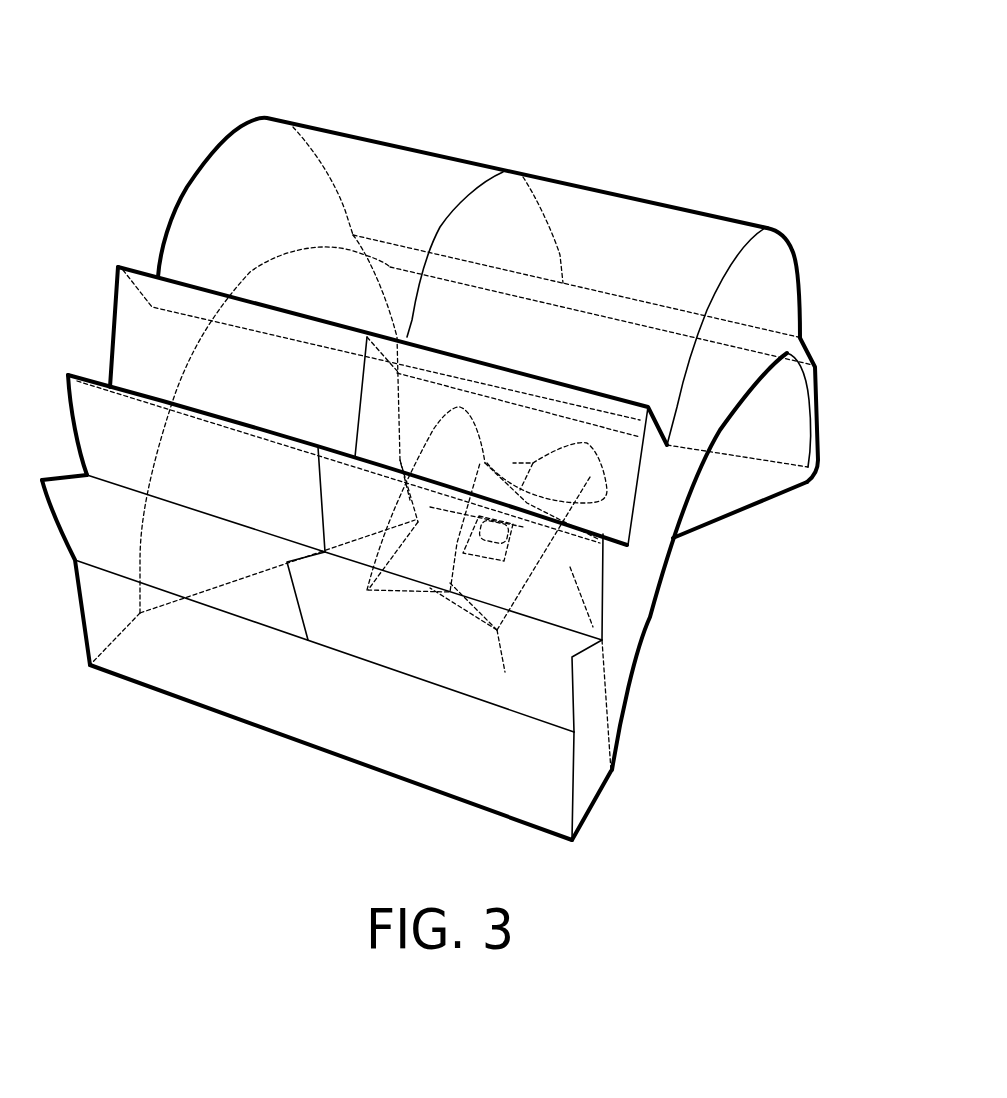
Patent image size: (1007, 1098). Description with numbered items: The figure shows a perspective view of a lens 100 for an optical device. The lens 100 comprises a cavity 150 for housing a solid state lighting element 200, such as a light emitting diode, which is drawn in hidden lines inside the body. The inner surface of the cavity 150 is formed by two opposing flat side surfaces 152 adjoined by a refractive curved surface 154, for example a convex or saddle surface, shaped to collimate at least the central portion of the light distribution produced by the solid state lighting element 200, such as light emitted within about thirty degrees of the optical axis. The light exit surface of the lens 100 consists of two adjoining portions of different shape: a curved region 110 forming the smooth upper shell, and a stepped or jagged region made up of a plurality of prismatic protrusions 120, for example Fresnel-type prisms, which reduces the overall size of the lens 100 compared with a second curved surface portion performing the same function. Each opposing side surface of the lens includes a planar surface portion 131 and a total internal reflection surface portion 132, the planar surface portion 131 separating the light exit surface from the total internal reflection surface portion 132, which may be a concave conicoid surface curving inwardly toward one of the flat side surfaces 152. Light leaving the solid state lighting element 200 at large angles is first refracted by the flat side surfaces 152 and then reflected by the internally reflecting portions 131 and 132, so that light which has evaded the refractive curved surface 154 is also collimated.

The lens 100 is at (712, 88).
The curved region 110 is at (361, 178).
The prismatic protrusions 120 is at (136, 286).
The planar surface portion 131 is at (770, 288).
The total internal reflection surface portion 132 is at (790, 467).
The cavity 150 is at (433, 560).
The flat side surfaces 152 is at (583, 493).
The refractive curved surface 154 is at (475, 485).
The solid state lighting element 200 is at (495, 537).